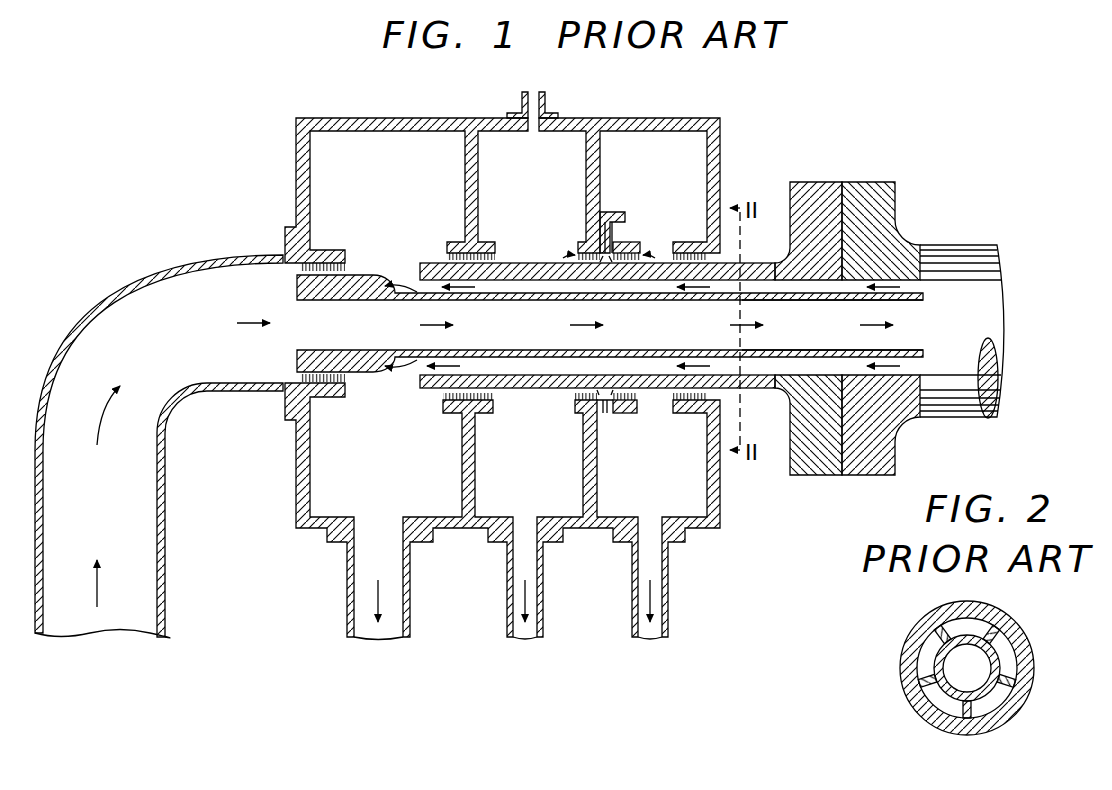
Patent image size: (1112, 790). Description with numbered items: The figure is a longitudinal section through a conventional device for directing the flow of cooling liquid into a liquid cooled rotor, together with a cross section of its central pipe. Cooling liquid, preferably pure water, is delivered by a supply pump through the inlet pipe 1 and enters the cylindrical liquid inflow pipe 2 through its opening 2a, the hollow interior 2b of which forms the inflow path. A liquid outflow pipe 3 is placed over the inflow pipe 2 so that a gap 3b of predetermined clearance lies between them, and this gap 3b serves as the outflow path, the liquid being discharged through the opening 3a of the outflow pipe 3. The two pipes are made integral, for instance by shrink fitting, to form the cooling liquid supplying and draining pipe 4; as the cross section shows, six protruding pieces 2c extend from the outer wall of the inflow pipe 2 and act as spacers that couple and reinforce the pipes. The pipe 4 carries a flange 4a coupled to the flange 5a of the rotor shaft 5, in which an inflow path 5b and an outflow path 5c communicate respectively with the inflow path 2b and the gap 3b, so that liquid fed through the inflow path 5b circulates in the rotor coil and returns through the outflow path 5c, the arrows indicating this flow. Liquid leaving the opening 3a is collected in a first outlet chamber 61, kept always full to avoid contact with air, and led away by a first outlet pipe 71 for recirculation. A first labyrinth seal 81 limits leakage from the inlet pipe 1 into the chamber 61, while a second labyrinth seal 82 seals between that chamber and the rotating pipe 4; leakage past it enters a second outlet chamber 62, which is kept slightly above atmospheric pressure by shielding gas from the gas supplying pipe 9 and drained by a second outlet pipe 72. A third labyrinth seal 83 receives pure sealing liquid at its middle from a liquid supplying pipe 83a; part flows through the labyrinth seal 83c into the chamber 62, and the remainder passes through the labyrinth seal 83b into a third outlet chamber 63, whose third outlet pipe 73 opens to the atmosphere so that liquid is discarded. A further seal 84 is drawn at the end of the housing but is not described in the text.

In FIG. 1, the inlet pipe 1 is at (165, 545).
In FIG. 1, the liquid inflow pipe 2 is at (395, 273).
In FIG. 2, the liquid inflow pipe 2 is at (968, 701).
In FIG. 1, the opening 2a is at (296, 326).
In FIG. 1, the hollow interior (inflow path) 2b is at (338, 348).
In FIG. 2, the hollow interior (inflow path) 2b is at (928, 688).
In FIG. 2, the protruding pieces 2c is at (928, 662).
In FIG. 1, the liquid outflow pipe 3 is at (533, 262).
In FIG. 2, the liquid outflow pipe 3 is at (1033, 683).
In FIG. 1, the opening 3a is at (412, 268).
In FIG. 1, the gap (outflow path) 3b is at (495, 284).
In FIG. 2, the gap (outflow path) 3b is at (1020, 703).
In FIG. 1, the cooling liquid supplying and draining pipe 4 is at (666, 338).
In FIG. 2, the cooling liquid supplying and draining pipe 4 is at (1030, 633).
In FIG. 1, the flange 4a is at (815, 182).
In FIG. 1, the rotor shaft 5 is at (955, 245).
In FIG. 1, the flange of the shaft 5a is at (868, 182).
In FIG. 1, the inflow path 5b is at (905, 301).
In FIG. 1, the outflow path 5c is at (905, 375).
In FIG. 1, the gas supplying pipe 9 is at (546, 102).
In FIG. 1, the first outlet chamber 61 is at (410, 140).
In FIG. 1, the second outlet chamber 62 is at (492, 140).
In FIG. 1, the third outlet chamber 63 is at (657, 142).
In FIG. 1, the first outlet pipe 71 is at (346, 592).
In FIG. 1, the second outlet pipe 72 is at (506, 615).
In FIG. 1, the third outlet pipe 73 is at (632, 612).
In FIG. 1, the first labyrinth seal 81 is at (345, 262).
In FIG. 1, the second labyrinth seal 82 is at (498, 252).
In FIG. 1, the third labyrinth seal 83 is at (620, 414).
In FIG. 1, the liquid supplying pipe 83a is at (622, 213).
In FIG. 1, the labyrinth seal 83b is at (648, 250).
In FIG. 1, the labyrinth seal 83c is at (578, 246).
In FIG. 1, the fourth seal 84 is at (673, 254).